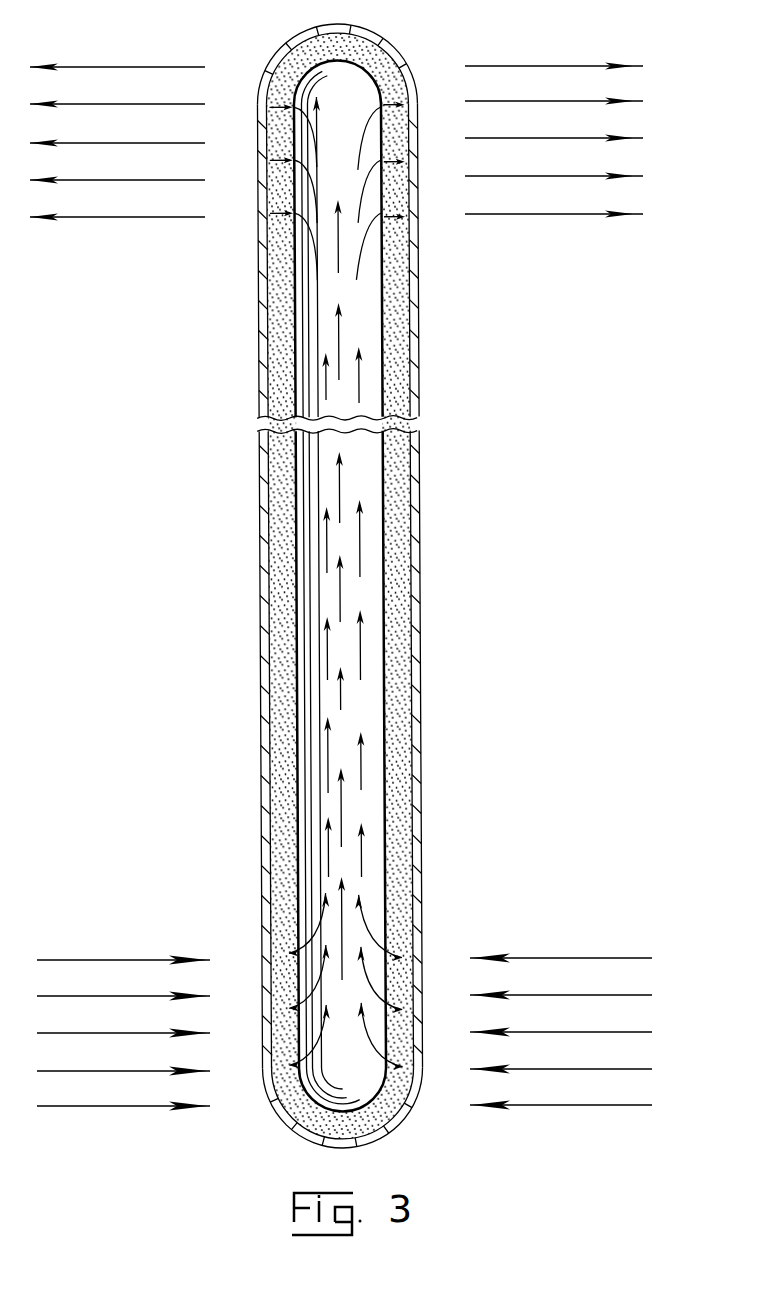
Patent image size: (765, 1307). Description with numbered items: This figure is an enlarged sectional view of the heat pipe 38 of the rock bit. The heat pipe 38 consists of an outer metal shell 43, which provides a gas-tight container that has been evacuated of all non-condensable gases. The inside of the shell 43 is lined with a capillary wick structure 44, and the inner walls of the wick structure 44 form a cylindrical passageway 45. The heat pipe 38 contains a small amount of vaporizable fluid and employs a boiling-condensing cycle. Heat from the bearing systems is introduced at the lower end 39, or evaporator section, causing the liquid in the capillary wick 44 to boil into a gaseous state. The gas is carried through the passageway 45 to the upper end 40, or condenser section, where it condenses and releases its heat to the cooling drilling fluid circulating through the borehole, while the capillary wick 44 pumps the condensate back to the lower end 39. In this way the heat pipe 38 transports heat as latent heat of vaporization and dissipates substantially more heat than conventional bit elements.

The heat pipe 38 is at (423, 626).
The lower end 39 is at (408, 1130).
The upper end 40 is at (398, 47).
The outer metal shell 43 is at (262, 763).
The capillary wick structure 44 is at (287, 708).
The cylindrical passageway 45 is at (350, 651).